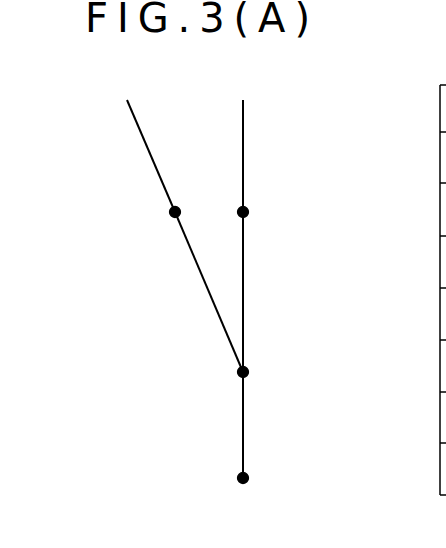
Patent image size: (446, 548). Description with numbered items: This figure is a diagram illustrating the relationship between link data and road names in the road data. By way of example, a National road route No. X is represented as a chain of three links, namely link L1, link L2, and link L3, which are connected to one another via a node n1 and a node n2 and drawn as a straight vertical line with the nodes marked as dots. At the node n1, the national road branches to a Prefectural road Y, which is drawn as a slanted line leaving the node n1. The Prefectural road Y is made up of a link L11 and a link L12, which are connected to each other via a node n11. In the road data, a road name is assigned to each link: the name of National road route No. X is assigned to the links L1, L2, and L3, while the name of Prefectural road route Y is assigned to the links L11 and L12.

The link L1 is at (244, 428).
The link L2 is at (244, 280).
The link L3 is at (244, 150).
The link L11 is at (203, 280).
The link L12 is at (148, 150).
The node n1 is at (261, 371).
The node n2 is at (262, 213).
The node n11 is at (149, 222).